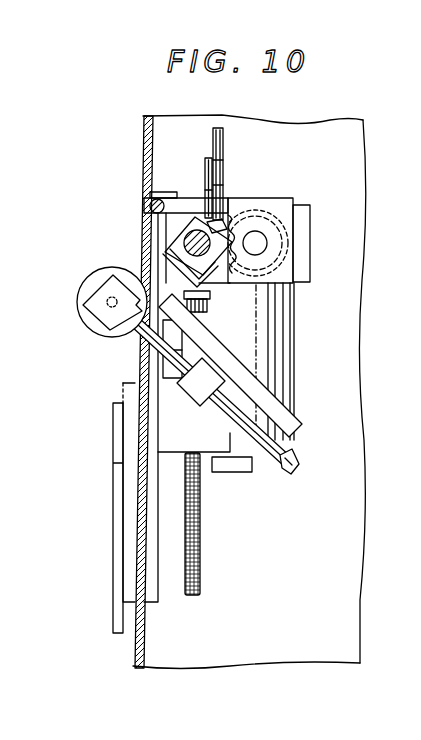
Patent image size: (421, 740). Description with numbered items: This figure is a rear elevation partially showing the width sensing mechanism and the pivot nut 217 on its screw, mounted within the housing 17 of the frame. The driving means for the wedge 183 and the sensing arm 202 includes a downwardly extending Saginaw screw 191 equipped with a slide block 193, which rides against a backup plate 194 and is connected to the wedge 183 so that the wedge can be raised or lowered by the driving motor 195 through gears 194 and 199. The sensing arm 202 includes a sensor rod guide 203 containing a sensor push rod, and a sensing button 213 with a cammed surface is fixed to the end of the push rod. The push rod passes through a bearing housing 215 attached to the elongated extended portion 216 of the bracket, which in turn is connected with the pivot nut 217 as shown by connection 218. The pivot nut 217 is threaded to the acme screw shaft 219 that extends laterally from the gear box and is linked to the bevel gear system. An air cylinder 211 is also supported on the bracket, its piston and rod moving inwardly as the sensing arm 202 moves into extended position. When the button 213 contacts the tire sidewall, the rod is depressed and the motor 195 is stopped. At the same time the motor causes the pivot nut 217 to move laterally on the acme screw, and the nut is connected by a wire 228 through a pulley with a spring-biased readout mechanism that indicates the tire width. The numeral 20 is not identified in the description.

The housing 17 is at (136, 653).
The tip of rod 20 is at (283, 452).
The wedge 183 is at (113, 573).
The Saginaw screw 191 is at (202, 553).
The slide block 193 is at (208, 442).
The backup plate 194 is at (158, 603).
The driving motor 195 is at (275, 341).
The gear 199 is at (278, 217).
The sensing arm 202 is at (178, 392).
The sensor rod guide 203 is at (137, 338).
The air cylinder 211 is at (323, 391).
The sensing button 213 is at (113, 267).
The bearing housing 215 is at (188, 393).
The elongated extended portion 216 is at (303, 423).
The pivot nut 217 is at (229, 216).
The connection 218 is at (200, 291).
The acme screw shaft 219 is at (197, 217).
The wire 228 is at (240, 118).